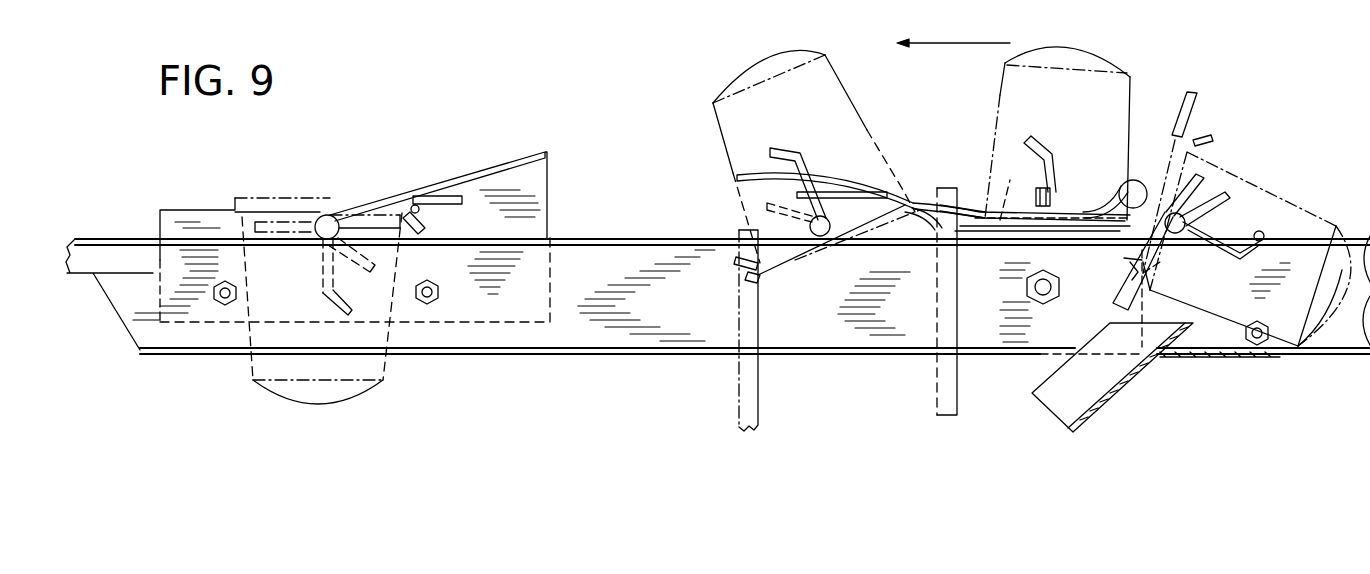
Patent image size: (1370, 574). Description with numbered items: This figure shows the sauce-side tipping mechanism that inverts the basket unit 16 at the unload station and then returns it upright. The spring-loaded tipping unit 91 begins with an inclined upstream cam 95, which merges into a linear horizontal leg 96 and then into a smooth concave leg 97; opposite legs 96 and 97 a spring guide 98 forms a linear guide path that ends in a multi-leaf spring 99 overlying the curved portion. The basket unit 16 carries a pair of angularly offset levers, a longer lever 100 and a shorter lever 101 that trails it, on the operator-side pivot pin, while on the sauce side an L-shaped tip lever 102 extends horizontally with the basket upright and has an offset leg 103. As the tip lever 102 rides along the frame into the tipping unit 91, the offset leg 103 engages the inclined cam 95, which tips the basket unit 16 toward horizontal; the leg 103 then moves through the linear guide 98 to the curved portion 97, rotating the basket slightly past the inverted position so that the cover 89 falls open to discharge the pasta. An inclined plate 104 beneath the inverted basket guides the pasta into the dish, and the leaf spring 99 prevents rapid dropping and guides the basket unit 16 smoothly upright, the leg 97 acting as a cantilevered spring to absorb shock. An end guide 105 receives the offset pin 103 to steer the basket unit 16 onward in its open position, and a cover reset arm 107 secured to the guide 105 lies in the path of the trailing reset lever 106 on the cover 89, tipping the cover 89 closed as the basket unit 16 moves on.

The basket unit 16 is at (365, 196).
The cover 89 is at (942, 372).
The spring-loaded tipping unit 91 is at (968, 195).
The inclined upstream cam 95 is at (1132, 267).
The linear horizontal leg 96 is at (1007, 246).
The concave leg 97 is at (922, 235).
The spring guide 98 is at (1085, 211).
The multi-leaf spring 99 is at (862, 178).
The longer lever 100 is at (1095, 100).
The shorter lever 101 is at (1000, 220).
The tip lever 102 is at (1155, 278).
The offset leg 103 is at (1118, 220).
The inclined plate 104 is at (1122, 376).
The end guide 105 is at (438, 180).
The trailing reset lever 106 is at (425, 227).
The cover reset arm 107 is at (463, 203).